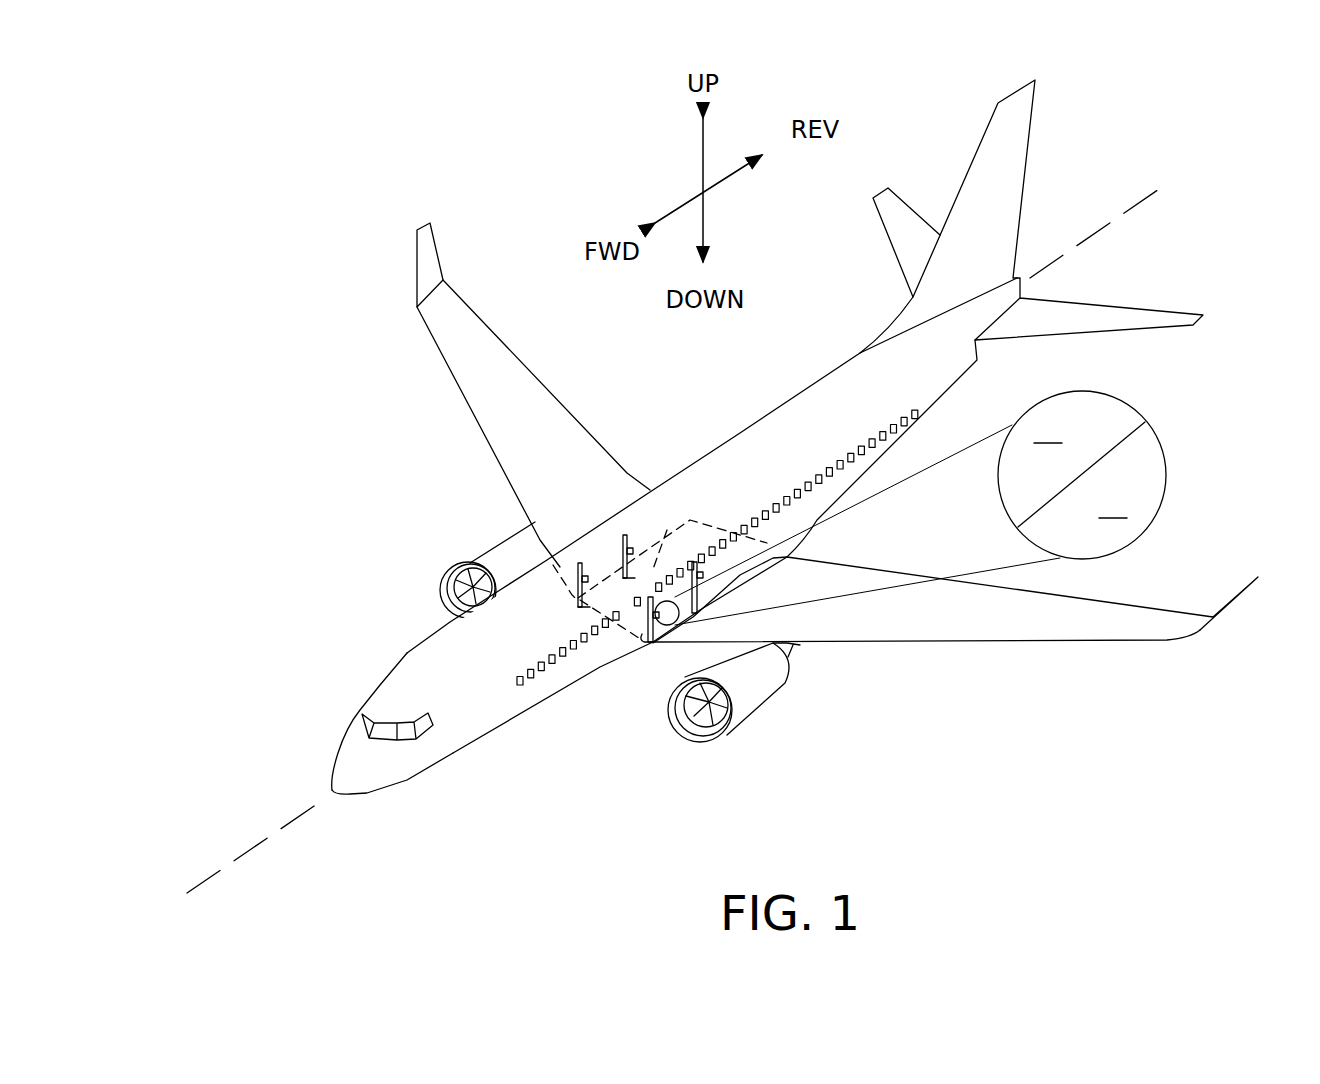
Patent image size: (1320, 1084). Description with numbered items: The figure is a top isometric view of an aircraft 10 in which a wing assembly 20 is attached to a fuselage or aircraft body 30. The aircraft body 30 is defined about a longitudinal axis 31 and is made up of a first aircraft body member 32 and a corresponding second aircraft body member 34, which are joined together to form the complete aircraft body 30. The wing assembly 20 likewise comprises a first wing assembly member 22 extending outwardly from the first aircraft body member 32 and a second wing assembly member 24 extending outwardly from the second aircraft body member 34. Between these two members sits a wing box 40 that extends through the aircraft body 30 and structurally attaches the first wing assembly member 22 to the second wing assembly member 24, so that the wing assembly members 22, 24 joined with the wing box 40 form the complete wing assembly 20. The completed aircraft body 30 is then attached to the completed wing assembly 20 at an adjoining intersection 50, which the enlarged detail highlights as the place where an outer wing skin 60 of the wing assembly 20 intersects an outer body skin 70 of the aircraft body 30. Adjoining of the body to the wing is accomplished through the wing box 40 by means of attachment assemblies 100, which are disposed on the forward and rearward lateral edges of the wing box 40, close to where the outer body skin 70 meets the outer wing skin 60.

The aircraft 10 is at (749, 455).
The wing assembly 20 is at (963, 627).
The first wing assembly member 22 is at (447, 343).
The second wing assembly member 24 is at (1147, 627).
The aircraft body 30 is at (350, 772).
The longitudinal axis 31 is at (245, 852).
The first aircraft body member 32 is at (402, 658).
The second aircraft body member 34 is at (448, 750).
The wing box 40 is at (665, 525).
The adjoining intersection 50 is at (1128, 430).
The outer wing skin 60 is at (1147, 458).
The outer body skin 70 is at (951, 489).
The attachment assemblies 100 is at (693, 575).